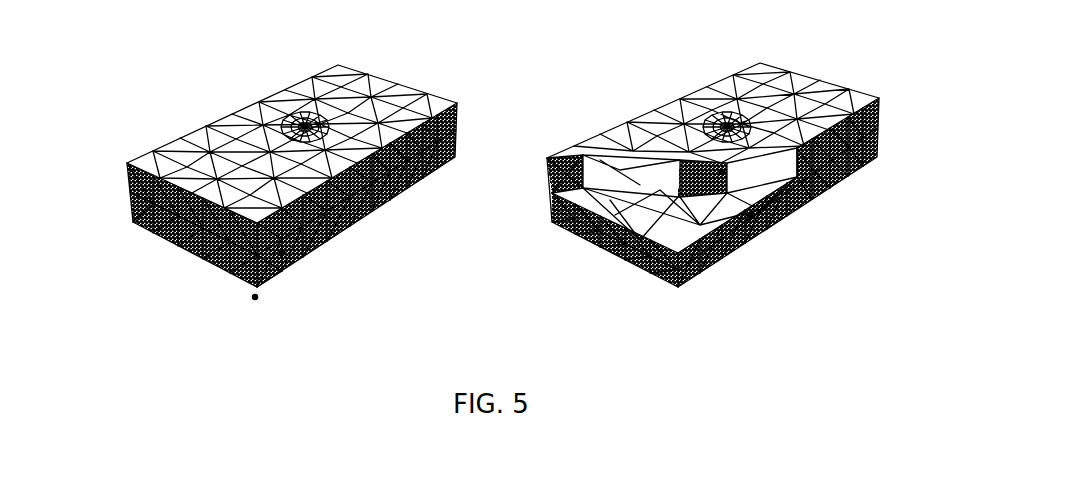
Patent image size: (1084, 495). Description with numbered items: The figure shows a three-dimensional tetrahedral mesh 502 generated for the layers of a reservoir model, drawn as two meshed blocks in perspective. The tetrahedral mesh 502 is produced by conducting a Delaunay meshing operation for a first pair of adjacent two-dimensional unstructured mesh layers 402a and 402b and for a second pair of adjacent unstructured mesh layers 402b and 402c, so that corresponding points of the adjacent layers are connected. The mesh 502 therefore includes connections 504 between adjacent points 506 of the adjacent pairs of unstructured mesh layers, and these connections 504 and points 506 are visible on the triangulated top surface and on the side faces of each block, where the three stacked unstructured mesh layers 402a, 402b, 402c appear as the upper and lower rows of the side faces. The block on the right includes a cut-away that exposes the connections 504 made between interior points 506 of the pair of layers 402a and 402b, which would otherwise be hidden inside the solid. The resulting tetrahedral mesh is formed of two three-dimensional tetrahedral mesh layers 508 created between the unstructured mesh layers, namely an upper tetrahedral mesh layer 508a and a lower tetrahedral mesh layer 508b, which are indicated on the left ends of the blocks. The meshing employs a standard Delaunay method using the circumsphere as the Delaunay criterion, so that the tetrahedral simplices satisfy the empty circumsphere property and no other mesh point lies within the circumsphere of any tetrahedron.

The 3D tetrahedral mesh 502 is at (425, 55).
The unstructured mesh layer 402a is at (462, 107).
The unstructured mesh layer 402b is at (464, 135).
The unstructured mesh layer 402c is at (462, 160).
The connections 504 is at (273, 278).
The points 506 is at (282, 253).
The 3D tetrahedral mesh layers 508 is at (112, 185).
The 3D tetrahedral mesh layer 508a is at (541, 187).
The 3D tetrahedral mesh layer 508b is at (113, 225).